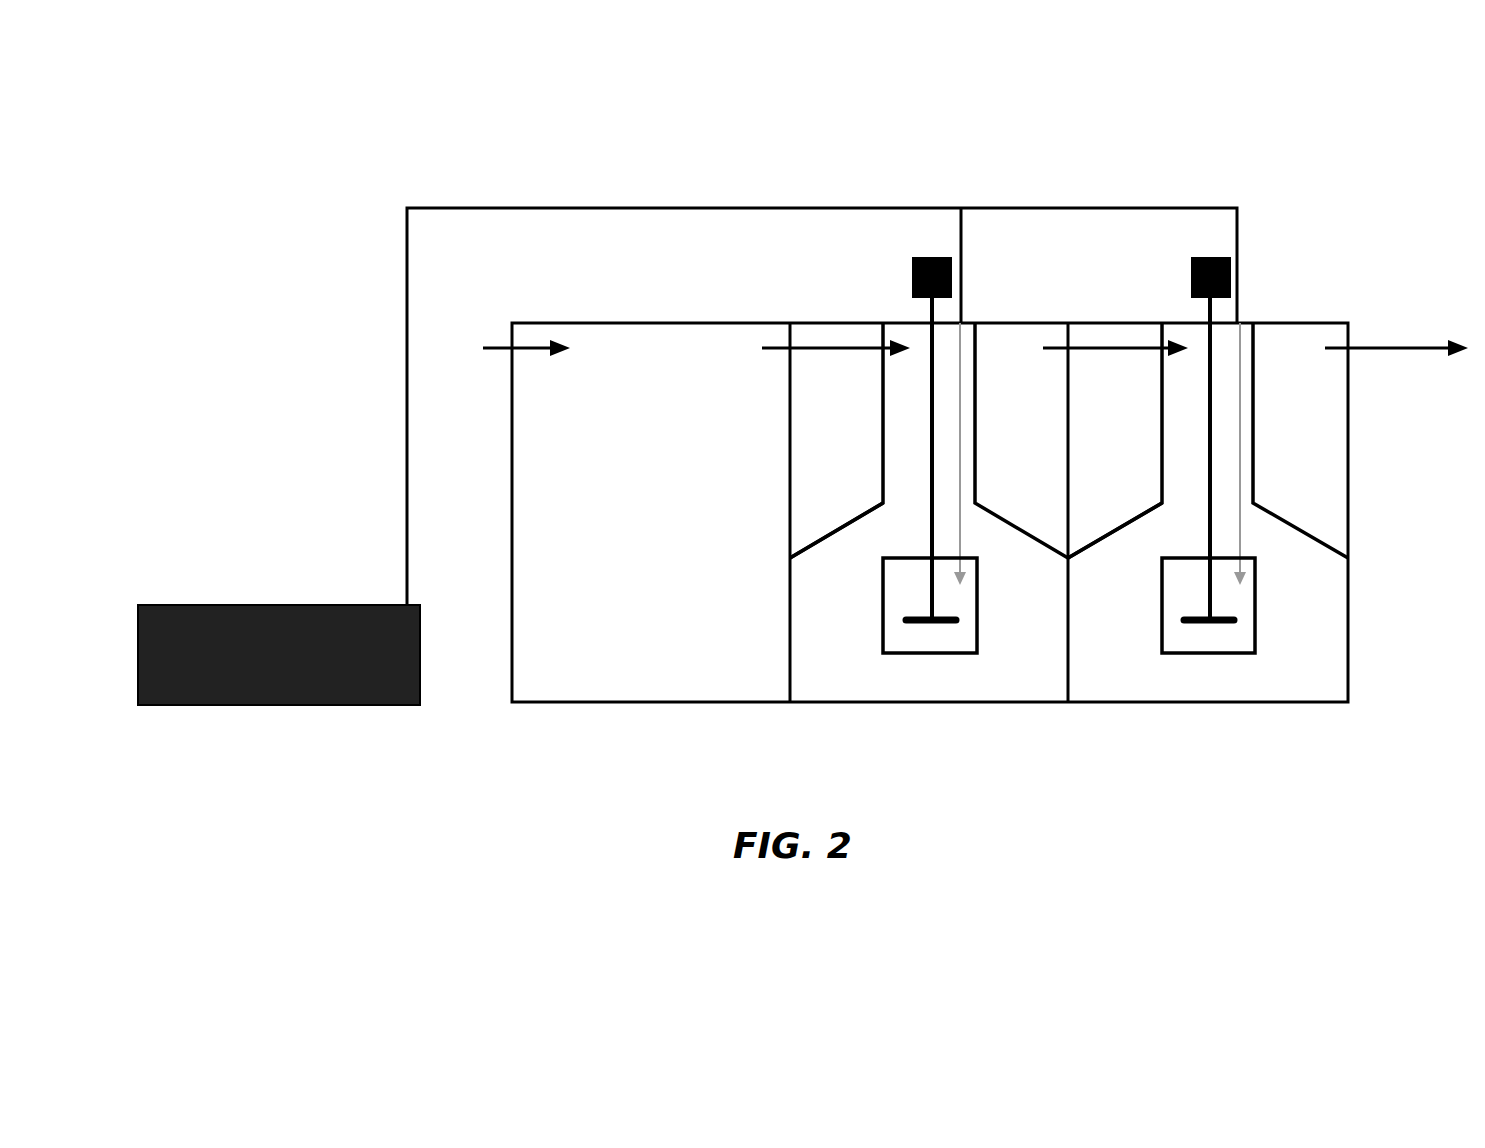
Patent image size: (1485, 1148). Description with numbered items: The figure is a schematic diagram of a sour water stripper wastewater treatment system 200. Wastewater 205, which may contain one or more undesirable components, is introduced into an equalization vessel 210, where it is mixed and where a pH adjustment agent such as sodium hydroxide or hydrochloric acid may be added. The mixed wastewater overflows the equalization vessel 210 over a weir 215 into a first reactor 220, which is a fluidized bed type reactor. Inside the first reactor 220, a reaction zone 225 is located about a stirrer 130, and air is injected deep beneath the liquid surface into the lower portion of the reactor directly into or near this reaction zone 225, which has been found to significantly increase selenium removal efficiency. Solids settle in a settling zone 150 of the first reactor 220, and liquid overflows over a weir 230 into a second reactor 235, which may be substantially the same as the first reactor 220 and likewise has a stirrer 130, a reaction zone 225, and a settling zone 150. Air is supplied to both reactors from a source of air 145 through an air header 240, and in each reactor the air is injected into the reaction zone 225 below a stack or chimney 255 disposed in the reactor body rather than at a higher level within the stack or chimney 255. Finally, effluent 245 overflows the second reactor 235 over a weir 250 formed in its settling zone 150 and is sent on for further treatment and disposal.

The system 200 is at (246, 247).
The stirrer 130 is at (957, 618).
The source of air 145 is at (277, 700).
The settling zone 150 is at (870, 466).
The wastewater 205 is at (495, 346).
The equalization vessel 210 is at (683, 662).
The weir 215 is at (788, 335).
The first reactor 220 is at (950, 672).
The reaction zone 225 is at (897, 625).
The weir 230 is at (1068, 337).
The second reactor 235 is at (1245, 675).
The air header 240 is at (843, 207).
The effluent 245 is at (1408, 327).
The weir 250 is at (1338, 332).
The stack or chimney 255 is at (915, 492).